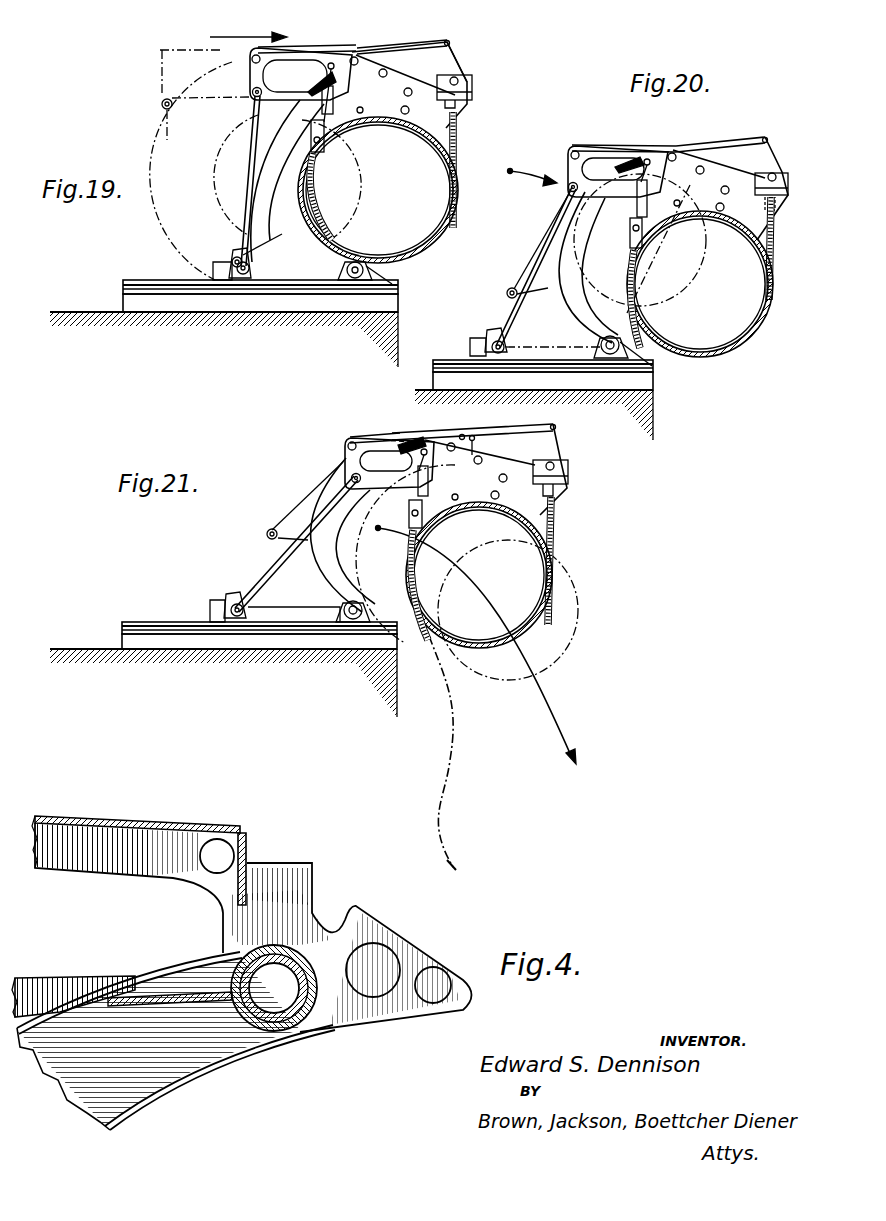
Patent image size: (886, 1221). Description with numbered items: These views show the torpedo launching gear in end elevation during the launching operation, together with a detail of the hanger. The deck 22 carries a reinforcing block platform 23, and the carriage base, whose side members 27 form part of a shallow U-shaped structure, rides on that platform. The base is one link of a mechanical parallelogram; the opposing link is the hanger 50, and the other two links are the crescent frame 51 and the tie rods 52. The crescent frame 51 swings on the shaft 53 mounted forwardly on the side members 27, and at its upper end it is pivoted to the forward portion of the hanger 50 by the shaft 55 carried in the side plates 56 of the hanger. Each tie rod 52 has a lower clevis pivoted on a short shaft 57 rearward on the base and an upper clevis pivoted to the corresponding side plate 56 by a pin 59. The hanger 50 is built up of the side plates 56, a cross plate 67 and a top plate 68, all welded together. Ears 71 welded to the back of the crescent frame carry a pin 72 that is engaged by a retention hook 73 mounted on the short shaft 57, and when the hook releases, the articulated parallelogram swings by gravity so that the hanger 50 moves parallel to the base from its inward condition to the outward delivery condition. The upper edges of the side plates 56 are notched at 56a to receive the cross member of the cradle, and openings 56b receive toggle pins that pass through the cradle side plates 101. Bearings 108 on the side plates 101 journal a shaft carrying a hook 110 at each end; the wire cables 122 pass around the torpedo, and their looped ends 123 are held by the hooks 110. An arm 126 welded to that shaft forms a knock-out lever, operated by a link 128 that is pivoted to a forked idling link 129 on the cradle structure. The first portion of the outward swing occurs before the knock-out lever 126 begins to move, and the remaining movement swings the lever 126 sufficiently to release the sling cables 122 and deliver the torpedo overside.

In FIG. 19, the deck 22 is at (126, 318).
In FIG. 20, the deck 22 is at (642, 396).
In FIG. 21, the deck 22 is at (170, 656).
In FIG. 19, the reinforcing block platform 23 is at (166, 300).
In FIG. 20, the reinforcing block platform 23 is at (646, 380).
In FIG. 21, the reinforcing block platform 23 is at (130, 641).
In FIG. 19, the side members 27 is at (288, 290).
In FIG. 20, the side members 27 is at (640, 366).
In FIG. 21, the side members 27 is at (278, 630).
In FIG. 19, the hanger 50 is at (246, 74).
In FIG. 20, the hanger 50 is at (566, 165).
In FIG. 21, the hanger 50 is at (340, 452).
In FIG. 4, the hanger 50 is at (139, 865).
In FIG. 19, the crescent frame 51 is at (268, 202).
In FIG. 20, the crescent frame 51 is at (568, 280).
In FIG. 21, the crescent frame 51 is at (328, 548).
In FIG. 4, the crescent frame 51 is at (168, 1052).
In FIG. 19, the tie rods 52 is at (250, 168).
In FIG. 20, the tie rods 52 is at (522, 300).
In FIG. 21, the tie rods 52 is at (290, 562).
In FIG. 19, the shaft 53 is at (355, 280).
In FIG. 20, the shaft 53 is at (610, 356).
In FIG. 21, the shaft 53 is at (352, 621).
In FIG. 19, the shaft 55 is at (368, 102).
In FIG. 20, the shaft 55 is at (688, 196).
In FIG. 21, the shaft 55 is at (470, 488).
In FIG. 4, the shaft 55 is at (302, 1020).
In FIG. 19, the side plates 56 is at (308, 50).
In FIG. 20, the side plates 56 is at (616, 146).
In FIG. 21, the side plates 56 is at (392, 440).
In FIG. 4, the side plates 56 is at (242, 923).
In FIG. 4, the notches 56a is at (322, 900).
In FIG. 4, the openings 56b is at (219, 840).
In FIG. 19, the short shaft 57 is at (243, 275).
In FIG. 20, the short shaft 57 is at (496, 356).
In FIG. 21, the short shaft 57 is at (236, 618).
In FIG. 19, the pin 59 is at (254, 94).
In FIG. 20, the pin 59 is at (568, 189).
In FIG. 21, the pin 59 is at (356, 478).
In FIG. 4, the cross plate 67 is at (248, 862).
In FIG. 4, the top plate 68 is at (100, 818).
In FIG. 19, the ears 71 is at (262, 238).
In FIG. 20, the ears 71 is at (541, 266).
In FIG. 21, the ears 71 is at (300, 510).
In FIG. 19, the pin 72 is at (232, 262).
In FIG. 20, the pin 72 is at (511, 288).
In FIG. 21, the pin 72 is at (267, 532).
In FIG. 19, the retention hook 73 is at (232, 276).
In FIG. 20, the retention hook 73 is at (488, 332).
In FIG. 21, the retention hook 73 is at (228, 596).
In FIG. 19, the side plates 101 is at (396, 124).
In FIG. 21, the side plates 101 is at (548, 512).
In FIG. 19, the bearings 108 is at (474, 89).
In FIG. 20, the bearings 108 is at (771, 184).
In FIG. 21, the bearings 108 is at (570, 476).
In FIG. 19, the hook 110 is at (462, 104).
In FIG. 20, the hook 110 is at (766, 202).
In FIG. 19, the wire cable 122 is at (460, 226).
In FIG. 20, the wire cable 122 is at (716, 352).
In FIG. 21, the wire cable 122 is at (558, 600).
In FIG. 19, the looped ends 123 is at (460, 132).
In FIG. 20, the looped ends 123 is at (770, 248).
In FIG. 21, the looped ends 123 is at (562, 502).
In FIG. 19, the arm (knock-out lever) 126 is at (455, 66).
In FIG. 20, the arm (knock-out lever) 126 is at (772, 160).
In FIG. 21, the arm (knock-out lever) 126 is at (562, 453).
In FIG. 19, the link 128 is at (400, 45).
In FIG. 20, the link 128 is at (746, 132).
In FIG. 21, the link 128 is at (498, 434).
In FIG. 21, the forked idling link 129 is at (476, 446).